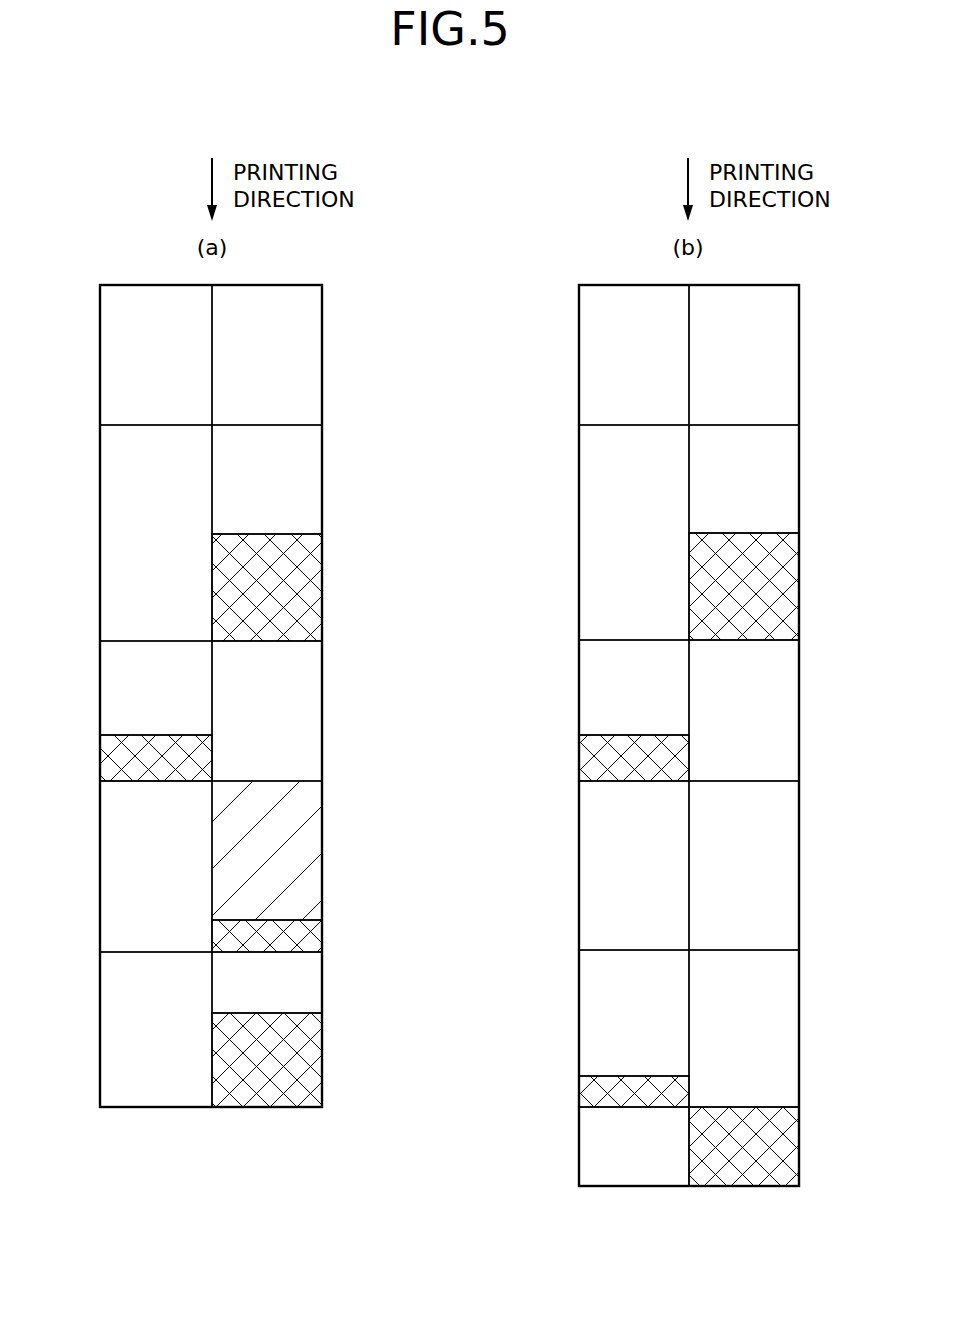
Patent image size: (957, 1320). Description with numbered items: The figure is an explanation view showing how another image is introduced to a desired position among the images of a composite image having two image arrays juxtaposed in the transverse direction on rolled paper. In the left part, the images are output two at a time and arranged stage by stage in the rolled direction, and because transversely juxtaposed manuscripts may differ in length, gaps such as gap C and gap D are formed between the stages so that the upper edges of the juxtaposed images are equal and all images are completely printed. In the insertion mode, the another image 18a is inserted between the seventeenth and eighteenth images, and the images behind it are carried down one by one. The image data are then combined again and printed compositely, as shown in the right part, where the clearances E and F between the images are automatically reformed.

The another image 18a is at (744, 865).
The gap C is at (320, 933).
The gap D is at (303, 1057).
The clearance E is at (588, 1092).
The clearance F is at (780, 1150).